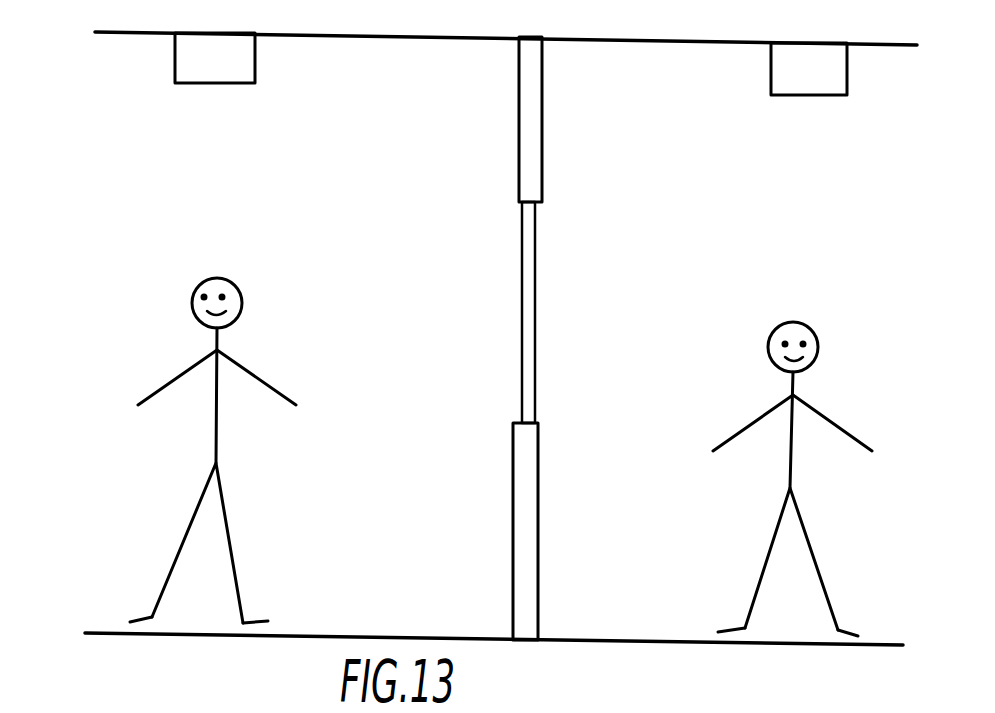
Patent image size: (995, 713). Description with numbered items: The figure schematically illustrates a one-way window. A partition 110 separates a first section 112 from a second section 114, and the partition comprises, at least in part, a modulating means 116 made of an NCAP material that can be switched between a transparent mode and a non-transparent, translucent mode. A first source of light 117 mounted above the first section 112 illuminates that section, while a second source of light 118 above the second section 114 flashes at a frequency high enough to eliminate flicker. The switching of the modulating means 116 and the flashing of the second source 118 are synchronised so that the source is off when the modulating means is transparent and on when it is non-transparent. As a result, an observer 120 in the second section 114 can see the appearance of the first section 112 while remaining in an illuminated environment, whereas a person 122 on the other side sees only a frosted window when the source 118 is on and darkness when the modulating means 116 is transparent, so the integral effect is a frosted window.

The partition 110 is at (542, 140).
The first section 112 is at (240, 156).
The second section 114 is at (828, 163).
The modulating means 116 is at (535, 277).
The first overhead unit 117 is at (215, 58).
The source of light 118 is at (809, 69).
The observer 120 is at (802, 323).
The person 122 is at (203, 281).